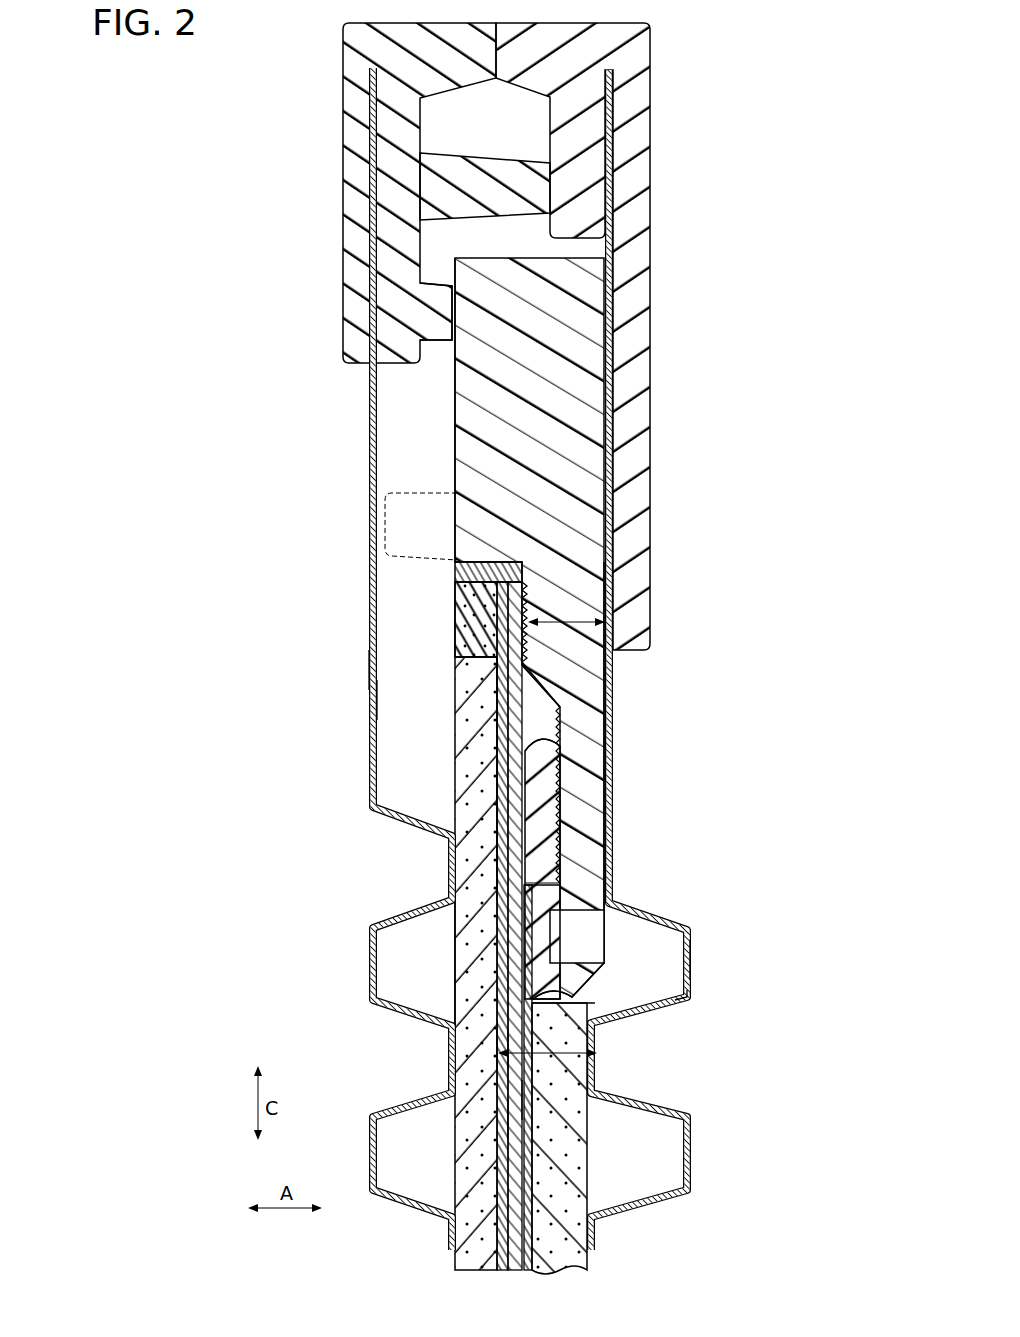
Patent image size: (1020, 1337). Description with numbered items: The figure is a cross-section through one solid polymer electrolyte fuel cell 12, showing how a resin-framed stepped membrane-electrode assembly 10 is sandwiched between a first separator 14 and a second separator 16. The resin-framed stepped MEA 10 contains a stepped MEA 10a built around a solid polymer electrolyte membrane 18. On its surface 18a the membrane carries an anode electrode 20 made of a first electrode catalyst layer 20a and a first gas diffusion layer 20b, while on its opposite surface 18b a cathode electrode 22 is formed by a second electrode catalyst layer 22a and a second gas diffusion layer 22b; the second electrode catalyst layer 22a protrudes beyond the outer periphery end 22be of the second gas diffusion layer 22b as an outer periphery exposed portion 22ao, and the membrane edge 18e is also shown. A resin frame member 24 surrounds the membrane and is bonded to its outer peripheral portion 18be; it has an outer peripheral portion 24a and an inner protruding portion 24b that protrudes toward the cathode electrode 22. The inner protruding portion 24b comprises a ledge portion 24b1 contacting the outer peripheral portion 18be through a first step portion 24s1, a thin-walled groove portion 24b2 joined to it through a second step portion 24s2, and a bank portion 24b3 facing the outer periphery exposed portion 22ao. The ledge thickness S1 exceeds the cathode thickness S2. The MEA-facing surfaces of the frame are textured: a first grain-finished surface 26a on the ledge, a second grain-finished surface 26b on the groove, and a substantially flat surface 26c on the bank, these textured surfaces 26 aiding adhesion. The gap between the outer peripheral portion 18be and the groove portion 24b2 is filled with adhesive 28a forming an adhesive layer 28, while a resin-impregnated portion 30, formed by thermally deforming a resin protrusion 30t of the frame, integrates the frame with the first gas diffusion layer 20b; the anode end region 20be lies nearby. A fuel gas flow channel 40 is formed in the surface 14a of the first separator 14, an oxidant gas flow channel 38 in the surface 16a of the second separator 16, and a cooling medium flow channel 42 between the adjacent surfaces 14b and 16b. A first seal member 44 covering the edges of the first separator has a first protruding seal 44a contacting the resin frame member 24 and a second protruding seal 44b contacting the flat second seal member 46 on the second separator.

The resin-framed stepped membrane-electrode assembly 10 is at (432, 473).
The stepped MEA 10a is at (593, 1135).
The solid polymer electrolyte fuel cell 12 is at (221, 98).
The first separator 14 is at (368, 640).
The surface of the first separator 14a is at (376, 700).
The surface of the first separator 14b is at (370, 663).
The second separator 16 is at (695, 932).
The surface of the second separator 16a is at (679, 1001).
The surface of the second separator 16b is at (692, 958).
The solid polymer electrolyte membrane 18 is at (512, 1165).
The surface of the solid polymer electrolyte membrane 18a is at (515, 1120).
The surface of the solid polymer electrolyte membrane 18b is at (530, 1100).
The upper end of center electrode 18e is at (506, 578).
The outer peripheral portion of the solid polymer electrolyte membrane 18be is at (524, 718).
The anode electrode 20 is at (377, 1032).
The first electrode catalyst layer 20a is at (502, 1050).
The first gas diffusion layer 20b is at (505, 1068).
The upper end of insulator 20be is at (497, 562).
The cathode electrode 22 is at (616, 1074).
The second electrode catalyst layer 22a is at (533, 1226).
The second gas diffusion layer 22b is at (567, 1257).
The outer periphery exposed portion 22ao is at (527, 891).
The outer periphery end 22be is at (596, 994).
The resin frame member 24 is at (454, 430).
The outer peripheral portion 24a is at (470, 455).
The inner protruding portion 24b is at (595, 687).
The ledge portion 24b1 is at (528, 602).
The groove portion 24b2 is at (590, 753).
The bank portion 24b3 is at (588, 945).
The first step portion 24s1 is at (460, 578).
The second step portion 24s2 is at (470, 699).
The insulating tube 26 is at (476, 963).
The first grain-finished surface 26a is at (470, 640).
The second grain-finished surface 26b is at (503, 758).
The surface of the bank portion 26c is at (470, 940).
The adhesive layer 28 is at (543, 795).
The adhesive 28a is at (542, 745).
The resin-impregnated portion 30 is at (480, 647).
The resin protrusion 30t is at (460, 563).
The oxidant gas flow channel 38 is at (647, 1154).
The fuel gas flow channel 40 is at (404, 1153).
The cooling medium flow channel 42 is at (417, 863).
The first seal member 44 is at (343, 57).
The first protruding seal 44a is at (431, 340).
The second protruding seal 44b is at (533, 187).
The second seal member 46 is at (651, 52).
The thickness of the ledge portion S1 is at (686, 624).
The thickness of the cathode electrode S2 is at (565, 1043).